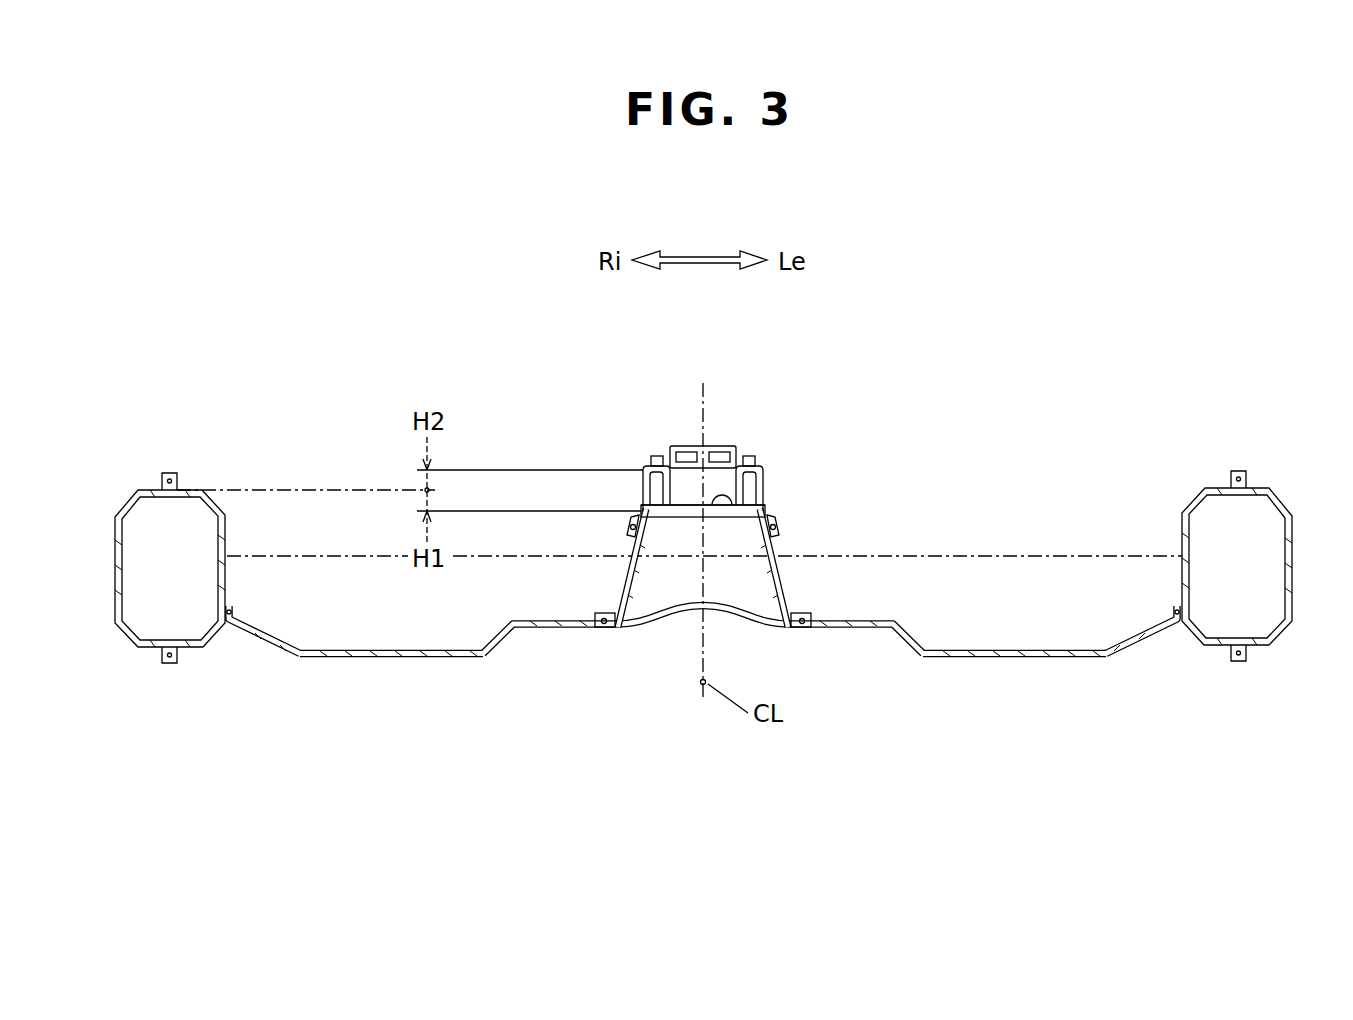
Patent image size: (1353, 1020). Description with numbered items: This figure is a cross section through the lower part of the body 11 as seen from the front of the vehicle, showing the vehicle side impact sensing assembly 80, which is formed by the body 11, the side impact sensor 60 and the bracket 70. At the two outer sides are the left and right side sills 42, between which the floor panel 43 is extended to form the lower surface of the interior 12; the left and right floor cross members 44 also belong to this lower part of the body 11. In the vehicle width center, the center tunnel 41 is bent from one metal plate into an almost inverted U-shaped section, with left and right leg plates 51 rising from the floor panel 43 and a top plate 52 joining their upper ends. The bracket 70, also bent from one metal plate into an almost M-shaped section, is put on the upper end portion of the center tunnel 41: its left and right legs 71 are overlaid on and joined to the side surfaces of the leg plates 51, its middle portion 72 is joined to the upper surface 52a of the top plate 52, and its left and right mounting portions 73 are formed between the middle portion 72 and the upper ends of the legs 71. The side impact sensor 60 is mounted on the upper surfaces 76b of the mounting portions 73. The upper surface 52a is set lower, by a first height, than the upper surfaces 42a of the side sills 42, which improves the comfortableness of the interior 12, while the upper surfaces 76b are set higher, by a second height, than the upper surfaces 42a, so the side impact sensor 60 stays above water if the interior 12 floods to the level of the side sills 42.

The body 11 is at (703, 693).
The interior 12 is at (981, 450).
The center tunnel 41 is at (718, 556).
The side sills 42 is at (707, 531).
The upper surfaces of the side sills 42a is at (188, 488).
The floor panel 43 is at (372, 657).
The floor cross members 44 is at (275, 556).
The leg plates 51 is at (604, 612).
The top plate 52 is at (667, 530).
The upper surface of the top plate 52a is at (643, 505).
The side impact sensor 60 is at (699, 409).
The bracket 70 is at (718, 522).
The legs 71 is at (628, 522).
The middle portion 72 is at (723, 502).
The mounting portions 73 is at (643, 478).
The upper surfaces of the mounting plates 76b is at (656, 456).
The vehicle side impact sensing assembly 80 is at (681, 466).